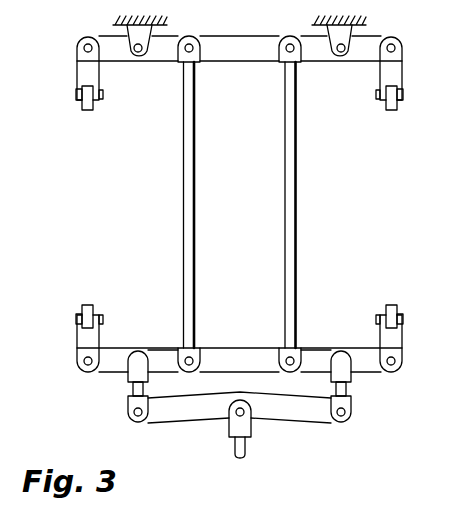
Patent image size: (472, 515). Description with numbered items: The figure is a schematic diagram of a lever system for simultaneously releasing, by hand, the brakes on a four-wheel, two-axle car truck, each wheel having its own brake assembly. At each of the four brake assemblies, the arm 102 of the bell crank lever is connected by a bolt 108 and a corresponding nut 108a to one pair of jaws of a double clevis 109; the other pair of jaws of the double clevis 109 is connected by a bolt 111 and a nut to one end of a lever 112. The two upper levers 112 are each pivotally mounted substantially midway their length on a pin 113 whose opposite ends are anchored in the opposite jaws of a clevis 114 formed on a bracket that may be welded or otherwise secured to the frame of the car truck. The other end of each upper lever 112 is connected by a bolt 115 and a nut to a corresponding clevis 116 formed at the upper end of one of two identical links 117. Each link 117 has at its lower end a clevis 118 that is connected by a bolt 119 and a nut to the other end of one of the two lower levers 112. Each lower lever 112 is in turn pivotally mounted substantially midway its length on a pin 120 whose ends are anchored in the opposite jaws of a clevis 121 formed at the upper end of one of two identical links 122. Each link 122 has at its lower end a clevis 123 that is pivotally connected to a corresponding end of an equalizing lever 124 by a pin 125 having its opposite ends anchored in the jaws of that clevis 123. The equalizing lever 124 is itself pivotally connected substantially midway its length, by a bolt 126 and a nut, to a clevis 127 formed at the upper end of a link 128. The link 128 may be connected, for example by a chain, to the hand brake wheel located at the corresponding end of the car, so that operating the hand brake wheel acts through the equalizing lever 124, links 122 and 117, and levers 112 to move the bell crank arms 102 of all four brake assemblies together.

The arm 102 is at (82, 90).
The bolt 108 is at (75, 96).
The nut 108a is at (104, 96).
The double clevis 109 is at (80, 72).
The bolt 111 is at (84, 48).
The lever 112 is at (334, 62).
The pin 113 is at (327, 59).
The clevis 114 is at (330, 42).
The bolt 115 is at (337, 47).
The clevis 116 is at (278, 48).
The link 117 is at (285, 207).
The clevis 118 is at (278, 360).
The bolt 119 is at (280, 369).
The pin 120 is at (308, 353).
The clevis 121 is at (130, 378).
The link 122 is at (131, 391).
The clevis 123 is at (130, 412).
The equalizing lever 124 is at (309, 417).
The pin 125 is at (138, 417).
The bolt 126 is at (237, 414).
The clevis 127 is at (231, 431).
The link 128 is at (247, 448).